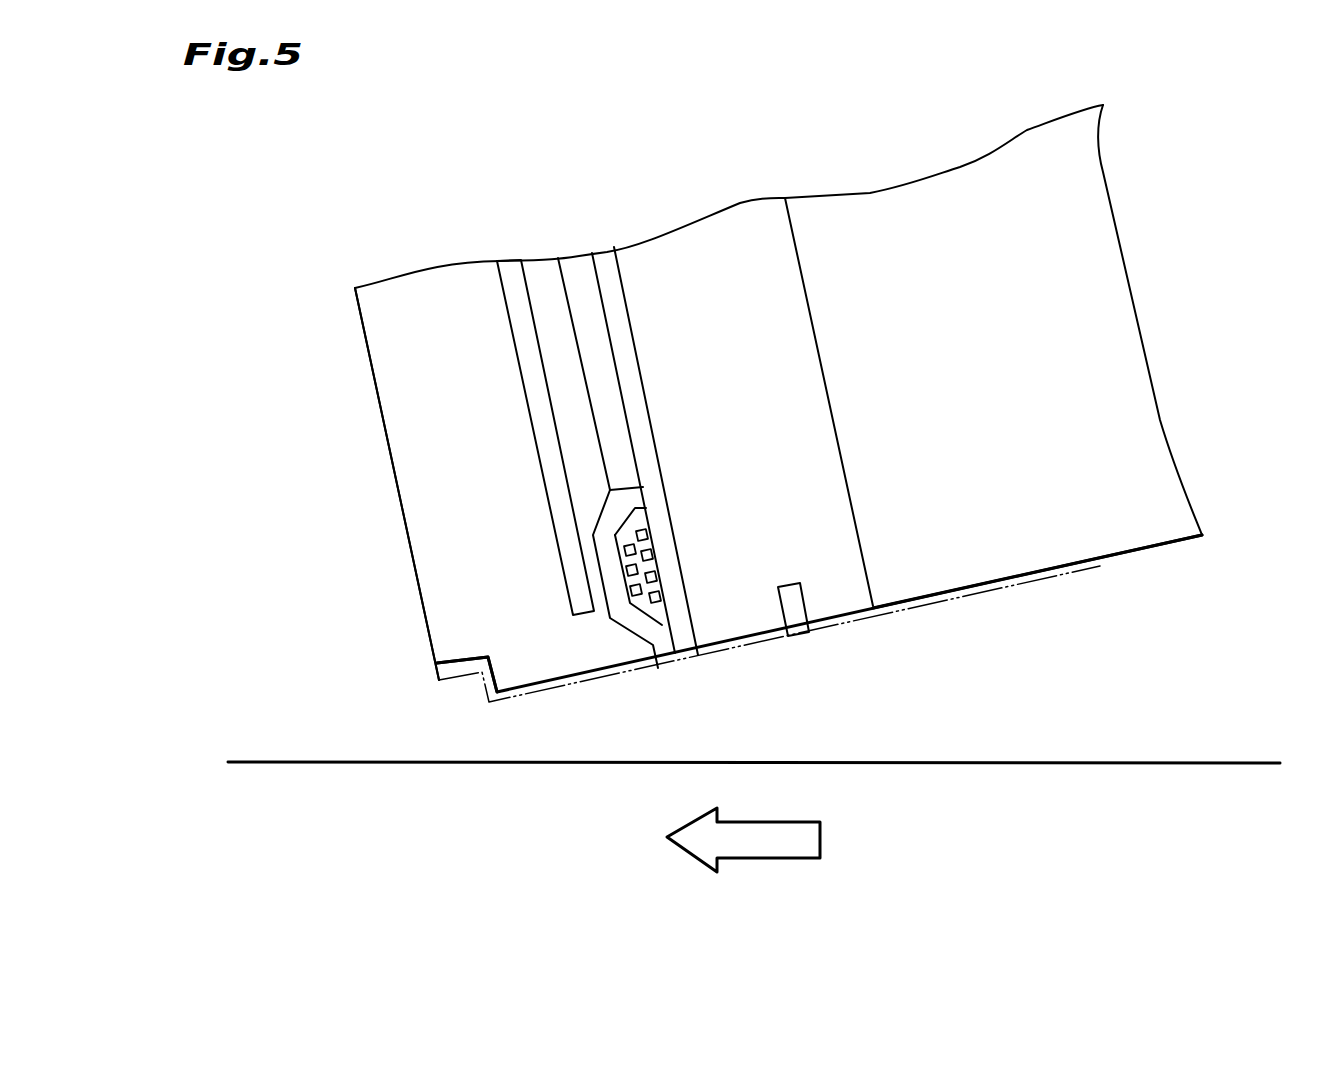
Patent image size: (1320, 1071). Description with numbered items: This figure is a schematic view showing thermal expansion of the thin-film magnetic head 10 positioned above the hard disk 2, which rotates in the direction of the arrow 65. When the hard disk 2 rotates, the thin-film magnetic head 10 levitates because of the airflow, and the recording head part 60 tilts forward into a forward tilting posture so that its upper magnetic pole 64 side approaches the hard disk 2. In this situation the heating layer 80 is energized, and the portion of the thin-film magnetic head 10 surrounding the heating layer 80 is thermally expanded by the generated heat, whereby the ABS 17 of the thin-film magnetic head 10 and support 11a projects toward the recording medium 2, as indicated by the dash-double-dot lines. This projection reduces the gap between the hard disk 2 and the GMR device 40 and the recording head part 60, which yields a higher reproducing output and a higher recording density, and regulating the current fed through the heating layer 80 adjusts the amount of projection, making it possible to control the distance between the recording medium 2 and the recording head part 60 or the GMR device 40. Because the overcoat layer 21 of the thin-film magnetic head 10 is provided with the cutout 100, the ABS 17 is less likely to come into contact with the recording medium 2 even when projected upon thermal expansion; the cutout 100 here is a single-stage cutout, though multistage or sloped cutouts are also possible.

The thin-film magnetic head 10 is at (380, 530).
The overcoat layer 21 is at (427, 293).
The heating layer 80 is at (510, 274).
The recording head part 60 is at (680, 511).
The upper magnetic pole 64 is at (631, 618).
The GMR device 40 is at (790, 600).
The ABS 17 is at (560, 680).
The cutout 100 is at (437, 663).
The support 11a is at (1057, 573).
The hard disk 2 is at (1120, 760).
The arrow 65 is at (763, 860).